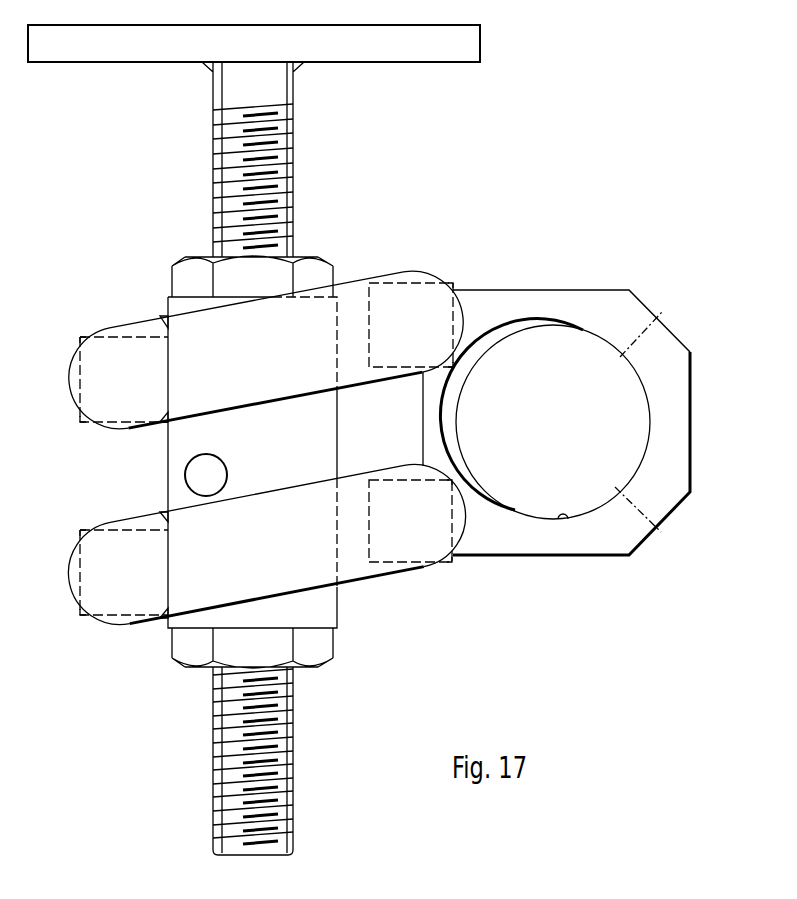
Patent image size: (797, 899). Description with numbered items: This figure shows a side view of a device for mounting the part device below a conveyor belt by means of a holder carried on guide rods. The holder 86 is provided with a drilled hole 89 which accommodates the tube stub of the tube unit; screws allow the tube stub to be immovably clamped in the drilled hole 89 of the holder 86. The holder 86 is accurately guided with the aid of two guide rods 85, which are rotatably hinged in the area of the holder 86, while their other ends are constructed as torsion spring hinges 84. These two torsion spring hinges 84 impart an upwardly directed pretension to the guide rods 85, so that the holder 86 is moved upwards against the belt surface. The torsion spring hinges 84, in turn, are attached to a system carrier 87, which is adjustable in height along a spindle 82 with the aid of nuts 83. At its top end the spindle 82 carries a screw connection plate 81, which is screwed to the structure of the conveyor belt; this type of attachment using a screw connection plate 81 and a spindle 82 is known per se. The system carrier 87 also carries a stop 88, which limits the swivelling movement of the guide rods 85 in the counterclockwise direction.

The screw connection plate 81 is at (437, 56).
The spindle 82 is at (217, 725).
The nuts 83 is at (320, 272).
The torsion spring hinges 84 is at (85, 421).
The guide rods 85 is at (190, 328).
The holder 86 is at (509, 537).
The system carrier 87 is at (323, 610).
The stop 88 is at (218, 473).
The drilled hole 89 is at (557, 520).